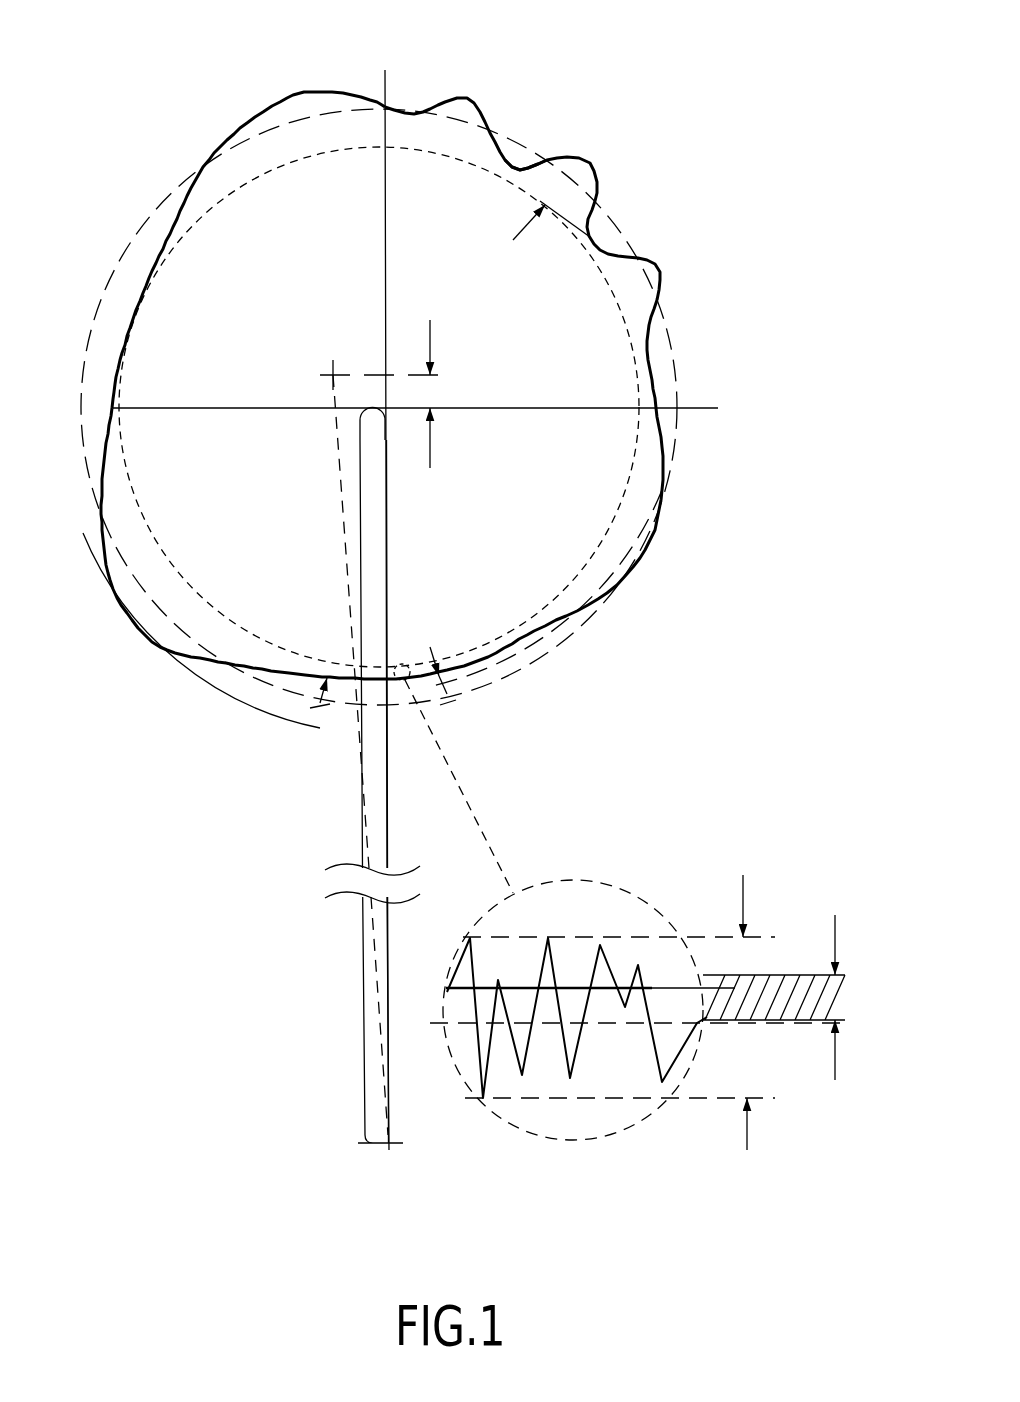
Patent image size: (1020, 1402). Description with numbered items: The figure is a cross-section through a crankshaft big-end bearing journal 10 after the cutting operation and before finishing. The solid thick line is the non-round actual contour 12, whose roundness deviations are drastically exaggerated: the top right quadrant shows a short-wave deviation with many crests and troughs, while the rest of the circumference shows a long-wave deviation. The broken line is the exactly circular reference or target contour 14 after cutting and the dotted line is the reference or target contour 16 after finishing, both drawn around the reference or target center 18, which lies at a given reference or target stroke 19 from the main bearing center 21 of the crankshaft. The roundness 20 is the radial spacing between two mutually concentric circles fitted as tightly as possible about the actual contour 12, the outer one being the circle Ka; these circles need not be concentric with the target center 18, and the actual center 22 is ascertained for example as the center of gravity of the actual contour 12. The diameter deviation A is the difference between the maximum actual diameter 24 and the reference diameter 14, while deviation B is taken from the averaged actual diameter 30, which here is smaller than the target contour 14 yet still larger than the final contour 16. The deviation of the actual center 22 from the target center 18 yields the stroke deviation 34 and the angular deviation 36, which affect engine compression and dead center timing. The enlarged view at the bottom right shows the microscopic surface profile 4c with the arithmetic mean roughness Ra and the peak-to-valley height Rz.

The big-end bearing journal 10 is at (250, 65).
The actual contour 12 is at (661, 270).
The reference or target contour after cutting 14 is at (490, 687).
The reference or target contour after finishing 16 is at (388, 565).
The reference or target center 18 is at (390, 412).
The reference or target stroke 19 is at (365, 973).
The roundness 20 is at (587, 150).
The main bearing center 21 is at (388, 1145).
The actual center 22 is at (333, 375).
The maximum actual diameter 24 is at (180, 663).
The averaged actual diameter 30 is at (503, 667).
The stroke deviation 34 is at (428, 374).
The angular deviation 36 is at (343, 557).
The outer circle Ka is at (569, 143).
The circularity deviation Kj is at (573, 225).
The surface roughness profile 4c is at (607, 988).
The arithmetic mean roughness Ra is at (794, 977).
The mean peak-to-valley height Rz is at (767, 1134).